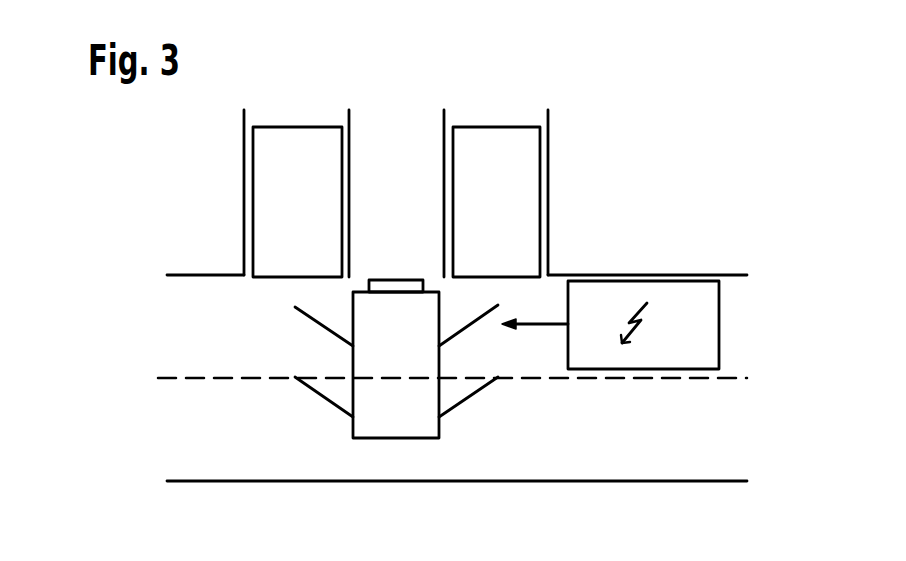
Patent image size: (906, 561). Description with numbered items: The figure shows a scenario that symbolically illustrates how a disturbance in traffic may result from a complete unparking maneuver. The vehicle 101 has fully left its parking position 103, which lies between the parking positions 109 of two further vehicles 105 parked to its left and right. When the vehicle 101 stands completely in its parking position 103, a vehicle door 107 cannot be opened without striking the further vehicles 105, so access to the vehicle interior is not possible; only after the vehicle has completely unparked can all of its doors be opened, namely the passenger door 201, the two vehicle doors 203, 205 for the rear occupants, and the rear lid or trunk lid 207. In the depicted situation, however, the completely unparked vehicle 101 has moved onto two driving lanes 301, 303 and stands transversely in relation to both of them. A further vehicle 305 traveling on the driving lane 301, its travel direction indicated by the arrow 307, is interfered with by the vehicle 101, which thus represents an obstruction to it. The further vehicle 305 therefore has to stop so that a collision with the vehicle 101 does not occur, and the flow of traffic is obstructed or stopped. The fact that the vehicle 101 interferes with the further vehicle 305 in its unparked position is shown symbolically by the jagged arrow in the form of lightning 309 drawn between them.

The vehicle 101 is at (398, 432).
The parking position 103 is at (403, 137).
The further vehicle 105 is at (265, 218).
The vehicle door 107 is at (477, 393).
The parking positions of further vehicles 109 is at (298, 120).
The passenger door 201 is at (317, 393).
The vehicle door for rear vehicle occupants 203 is at (317, 323).
The vehicle door for rear vehicle occupants 205 is at (470, 327).
The trunk lid 207 is at (398, 287).
The driving lane 301 is at (175, 335).
The driving lane 303 is at (175, 427).
The further vehicle 305 is at (688, 293).
The arrow 307 is at (537, 315).
The jagged arrow in the form of lightning 309 is at (635, 335).